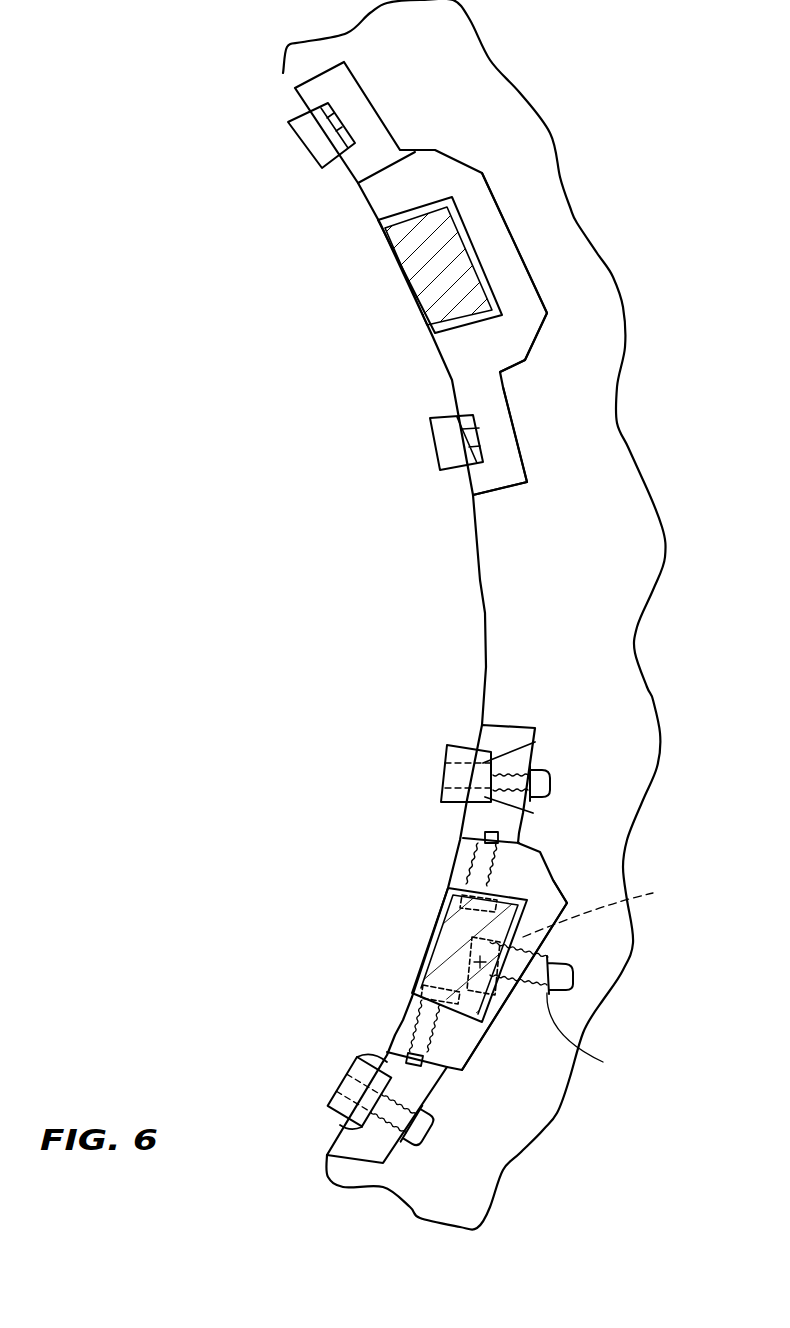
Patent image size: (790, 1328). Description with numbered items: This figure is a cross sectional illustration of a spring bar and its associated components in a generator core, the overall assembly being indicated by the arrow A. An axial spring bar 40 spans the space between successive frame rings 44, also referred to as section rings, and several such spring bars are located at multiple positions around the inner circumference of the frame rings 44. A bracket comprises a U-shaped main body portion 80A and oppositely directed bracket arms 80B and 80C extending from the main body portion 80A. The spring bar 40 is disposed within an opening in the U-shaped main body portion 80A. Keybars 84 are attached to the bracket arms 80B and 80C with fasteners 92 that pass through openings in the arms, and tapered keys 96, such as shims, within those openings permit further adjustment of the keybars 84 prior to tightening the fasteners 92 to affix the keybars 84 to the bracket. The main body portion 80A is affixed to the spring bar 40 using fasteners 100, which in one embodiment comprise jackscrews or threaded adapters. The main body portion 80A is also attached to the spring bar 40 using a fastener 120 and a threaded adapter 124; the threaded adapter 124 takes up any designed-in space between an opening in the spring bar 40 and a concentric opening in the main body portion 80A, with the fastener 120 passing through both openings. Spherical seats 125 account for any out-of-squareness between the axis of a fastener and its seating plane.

The bone plate assembly A is at (550, 245).
The frame ring 44 is at (482, 587).
The spring bar 40 is at (410, 263).
The U-shaped main body portion 80A is at (527, 267).
The bracket arm 80B is at (517, 428).
The bracket arm 80C is at (378, 100).
The keybar 84 is at (303, 147).
The fastener 92 is at (550, 780).
The tapered key 96 is at (535, 742).
The fastener 100 is at (470, 865).
The fastener 120 is at (573, 977).
The threaded adapter 124 is at (611, 907).
The spherical seat 125 is at (460, 894).